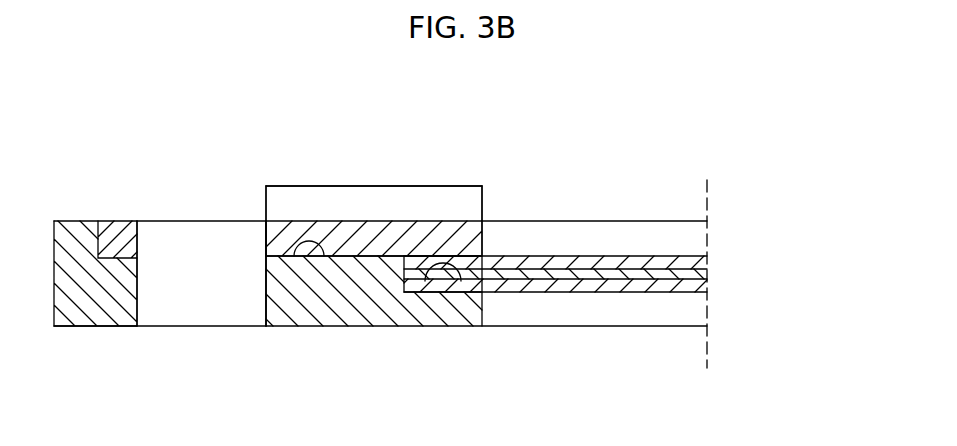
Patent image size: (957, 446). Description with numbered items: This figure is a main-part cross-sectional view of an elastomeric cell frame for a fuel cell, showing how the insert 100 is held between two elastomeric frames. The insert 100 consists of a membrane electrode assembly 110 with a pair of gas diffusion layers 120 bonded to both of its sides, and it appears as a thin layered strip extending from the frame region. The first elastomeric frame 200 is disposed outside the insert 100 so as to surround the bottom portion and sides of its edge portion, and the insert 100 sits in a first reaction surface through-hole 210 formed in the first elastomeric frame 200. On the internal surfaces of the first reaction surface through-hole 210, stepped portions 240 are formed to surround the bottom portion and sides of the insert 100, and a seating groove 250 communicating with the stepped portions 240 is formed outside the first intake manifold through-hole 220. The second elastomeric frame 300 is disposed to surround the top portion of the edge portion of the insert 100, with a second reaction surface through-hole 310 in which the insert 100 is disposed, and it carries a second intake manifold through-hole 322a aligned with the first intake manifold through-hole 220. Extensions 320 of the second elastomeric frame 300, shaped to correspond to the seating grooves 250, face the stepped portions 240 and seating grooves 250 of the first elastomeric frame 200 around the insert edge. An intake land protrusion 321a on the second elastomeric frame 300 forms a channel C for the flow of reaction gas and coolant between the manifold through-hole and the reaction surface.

The insert 100 is at (637, 279).
The membrane electrode assembly 110 is at (697, 270).
The gas diffusion layer 120 is at (697, 261).
The first elastomeric frame 200 is at (100, 313).
The first reaction surface through-hole 210 is at (569, 311).
The first intake manifold through-hole 220 is at (220, 310).
The stepped portion 240 is at (461, 281).
The seating groove 250 is at (324, 256).
The second elastomeric frame 300 is at (492, 238).
The second reaction surface through-hole 310 is at (636, 236).
The extension 320 is at (118, 235).
The intake land protrusion 321a is at (425, 186).
The second intake manifold through-hole 322a is at (220, 310).
The channel C is at (300, 198).